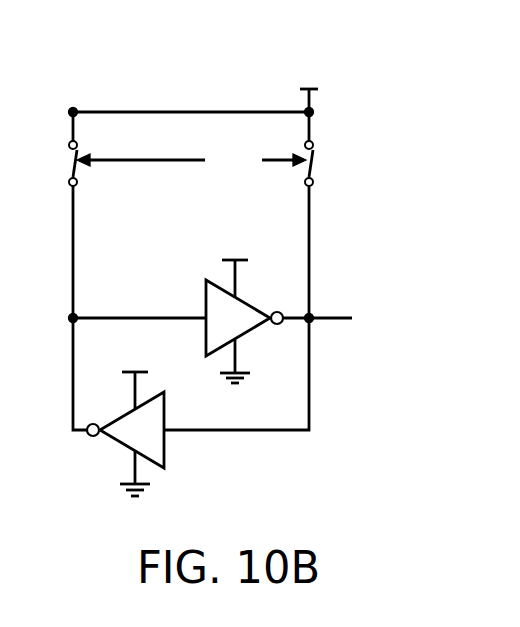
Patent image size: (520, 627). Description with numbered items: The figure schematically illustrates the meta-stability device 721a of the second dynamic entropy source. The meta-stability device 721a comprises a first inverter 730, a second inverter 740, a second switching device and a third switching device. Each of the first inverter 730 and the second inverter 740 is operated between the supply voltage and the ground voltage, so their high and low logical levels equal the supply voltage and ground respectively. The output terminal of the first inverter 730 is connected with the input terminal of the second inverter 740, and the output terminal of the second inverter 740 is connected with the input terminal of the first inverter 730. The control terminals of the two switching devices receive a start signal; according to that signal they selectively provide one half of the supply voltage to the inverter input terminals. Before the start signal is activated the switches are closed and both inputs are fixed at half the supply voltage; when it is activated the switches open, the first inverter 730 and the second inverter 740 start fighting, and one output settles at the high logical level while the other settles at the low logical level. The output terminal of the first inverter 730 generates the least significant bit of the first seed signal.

The meta-stability device 721a is at (138, 47).
The first inverter 730 is at (205, 284).
The second inverter 740 is at (165, 455).